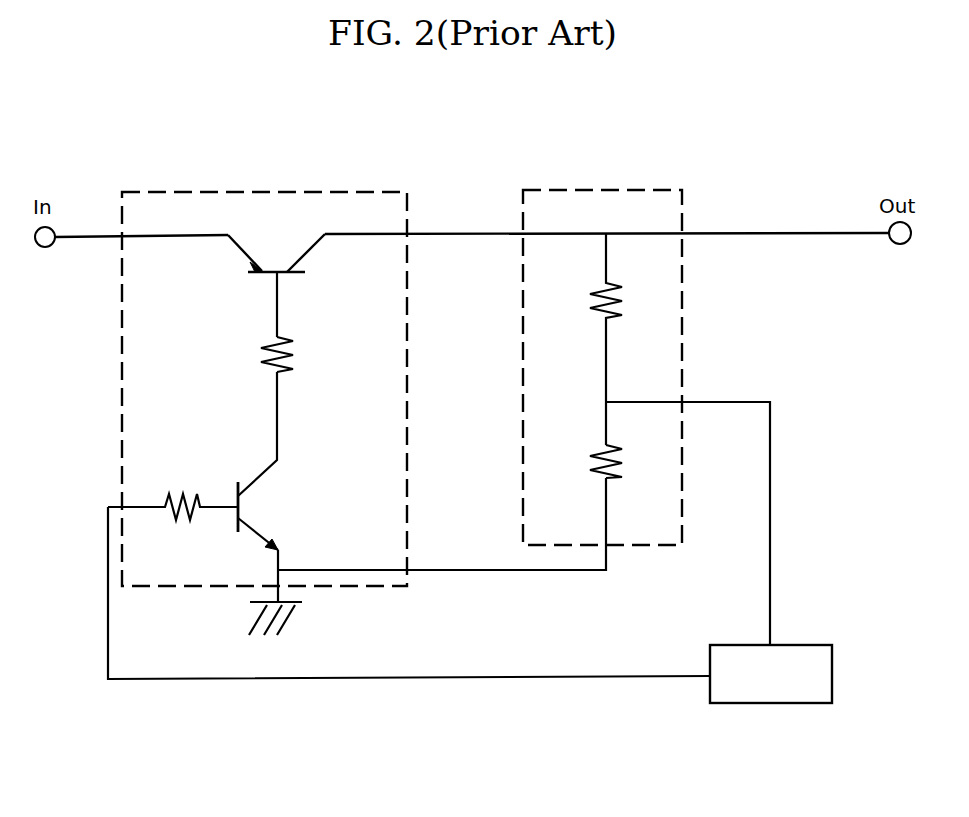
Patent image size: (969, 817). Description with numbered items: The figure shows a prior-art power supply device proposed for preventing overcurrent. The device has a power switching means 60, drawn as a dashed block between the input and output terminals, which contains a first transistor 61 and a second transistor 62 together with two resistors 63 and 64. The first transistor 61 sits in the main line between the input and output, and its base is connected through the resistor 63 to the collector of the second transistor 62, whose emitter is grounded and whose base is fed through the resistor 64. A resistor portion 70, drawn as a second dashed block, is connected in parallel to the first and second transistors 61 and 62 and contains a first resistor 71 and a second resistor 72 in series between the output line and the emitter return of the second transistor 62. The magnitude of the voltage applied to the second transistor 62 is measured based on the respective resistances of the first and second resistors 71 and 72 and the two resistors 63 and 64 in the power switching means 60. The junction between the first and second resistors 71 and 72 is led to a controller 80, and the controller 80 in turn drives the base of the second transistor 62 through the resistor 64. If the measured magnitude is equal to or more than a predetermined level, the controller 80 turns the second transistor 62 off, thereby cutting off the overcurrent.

The power switching means 60 is at (263, 193).
The first transistor 61 is at (276, 282).
The second transistor 62 is at (261, 542).
The resistor 63 is at (284, 416).
The resistor 64 is at (173, 489).
The resistor portion 70 is at (600, 191).
The first resistor 71 is at (624, 339).
The second resistor 72 is at (623, 461).
The controller 80 is at (771, 674).